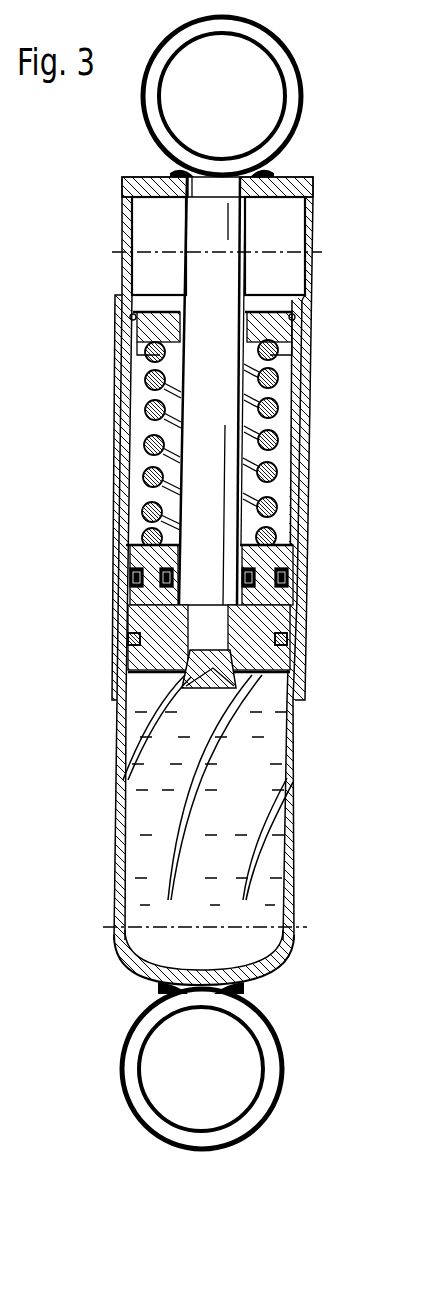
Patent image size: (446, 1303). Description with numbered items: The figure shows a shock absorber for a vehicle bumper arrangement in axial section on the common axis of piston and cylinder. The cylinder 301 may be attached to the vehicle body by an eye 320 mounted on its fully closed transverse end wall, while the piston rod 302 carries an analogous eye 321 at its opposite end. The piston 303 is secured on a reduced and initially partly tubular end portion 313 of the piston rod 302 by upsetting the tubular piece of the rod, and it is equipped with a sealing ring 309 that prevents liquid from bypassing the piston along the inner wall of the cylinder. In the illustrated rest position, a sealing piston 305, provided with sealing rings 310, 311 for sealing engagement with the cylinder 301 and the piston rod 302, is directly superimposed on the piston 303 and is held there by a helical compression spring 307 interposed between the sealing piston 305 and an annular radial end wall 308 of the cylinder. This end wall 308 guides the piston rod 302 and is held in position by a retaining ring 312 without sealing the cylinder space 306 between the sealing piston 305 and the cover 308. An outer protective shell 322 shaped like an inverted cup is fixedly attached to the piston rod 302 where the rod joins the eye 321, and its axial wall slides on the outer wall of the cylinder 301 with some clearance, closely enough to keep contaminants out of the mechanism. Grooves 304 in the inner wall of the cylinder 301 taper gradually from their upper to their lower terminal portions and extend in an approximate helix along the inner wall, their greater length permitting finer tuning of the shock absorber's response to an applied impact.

The cylinder 301 is at (115, 853).
The piston rod 302 is at (186, 229).
The piston 303 is at (133, 617).
The grooves 304 is at (120, 762).
The sealing piston 305 is at (292, 568).
The cylinder space 306 is at (130, 422).
The helical compression spring 307 is at (255, 374).
The annular radial end wall 308 is at (255, 320).
The sealing ring 309 is at (128, 640).
The sealing ring 310 is at (300, 588).
The sealing ring 311 is at (175, 580).
The retaining ring 312 is at (129, 317).
The reduced tubular end portion 313 is at (212, 672).
The eye 320 is at (132, 1063).
The eye 321 is at (153, 105).
The outer protective shell 322 is at (310, 244).